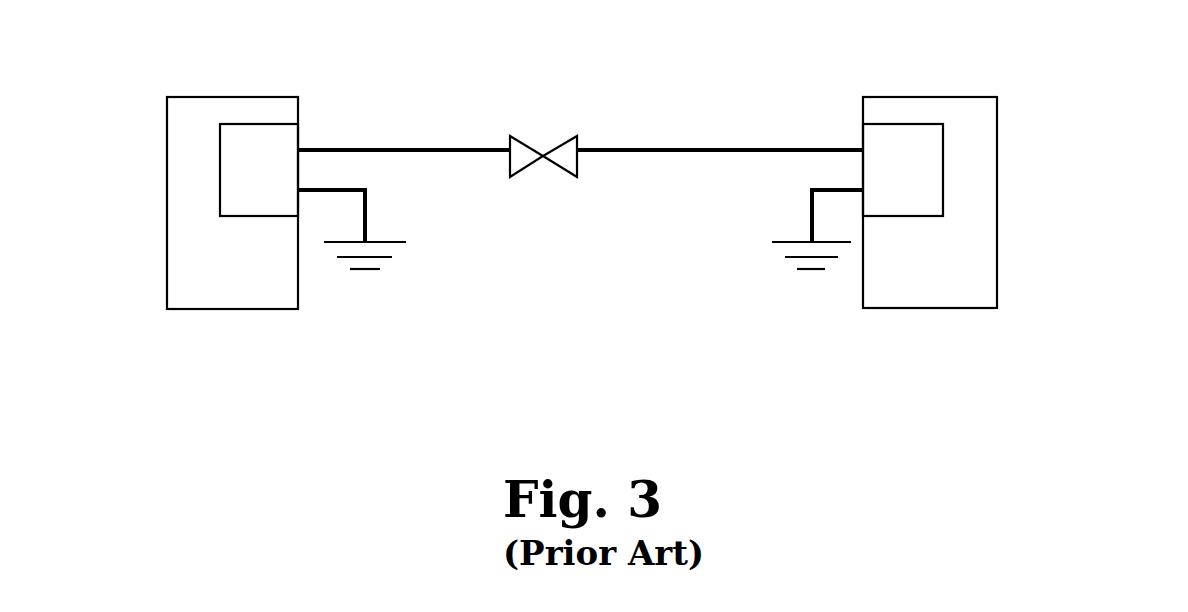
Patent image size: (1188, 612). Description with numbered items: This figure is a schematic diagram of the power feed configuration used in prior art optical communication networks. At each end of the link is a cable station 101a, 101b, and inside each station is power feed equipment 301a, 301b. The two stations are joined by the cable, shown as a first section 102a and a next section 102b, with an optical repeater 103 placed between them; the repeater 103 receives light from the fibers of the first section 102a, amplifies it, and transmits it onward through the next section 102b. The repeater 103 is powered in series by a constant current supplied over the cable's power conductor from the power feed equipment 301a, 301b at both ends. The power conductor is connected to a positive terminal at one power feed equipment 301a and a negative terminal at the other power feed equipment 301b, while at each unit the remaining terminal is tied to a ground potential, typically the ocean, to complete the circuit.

The cable station 101a is at (233, 97).
The cable station 101b is at (943, 95).
The first section of the cable 102a is at (443, 133).
The next section of the cable 102b is at (783, 132).
The optical repeater 103 is at (550, 107).
The power feed equipment 301a is at (233, 164).
The power feed equipment 301b is at (917, 177).